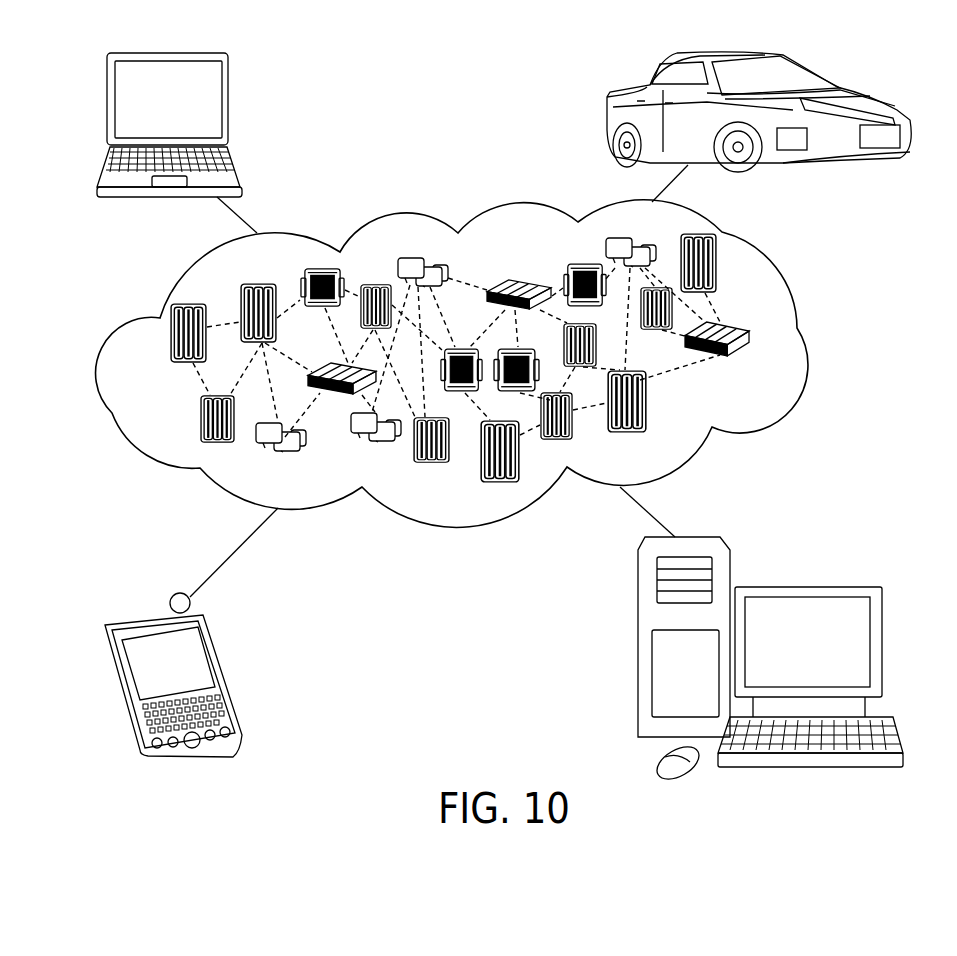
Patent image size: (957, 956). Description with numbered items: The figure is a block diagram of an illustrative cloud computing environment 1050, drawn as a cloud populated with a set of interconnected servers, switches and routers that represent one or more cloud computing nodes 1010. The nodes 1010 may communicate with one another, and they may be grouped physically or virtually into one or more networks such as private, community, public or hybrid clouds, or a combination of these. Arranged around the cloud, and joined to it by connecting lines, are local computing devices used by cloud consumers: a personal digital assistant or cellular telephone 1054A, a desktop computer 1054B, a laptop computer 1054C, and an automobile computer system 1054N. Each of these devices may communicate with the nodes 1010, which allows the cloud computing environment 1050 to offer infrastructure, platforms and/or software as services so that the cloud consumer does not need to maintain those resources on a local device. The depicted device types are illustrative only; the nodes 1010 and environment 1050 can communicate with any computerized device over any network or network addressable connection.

The cloud computing environment 1050 is at (798, 330).
The cloud computing node 1010 is at (782, 367).
The personal digital assistant or cellular telephone 1054A is at (225, 672).
The desktop computer 1054B is at (803, 585).
The laptop computer 1054C is at (228, 108).
The automobile computer system 1054N is at (710, 112).